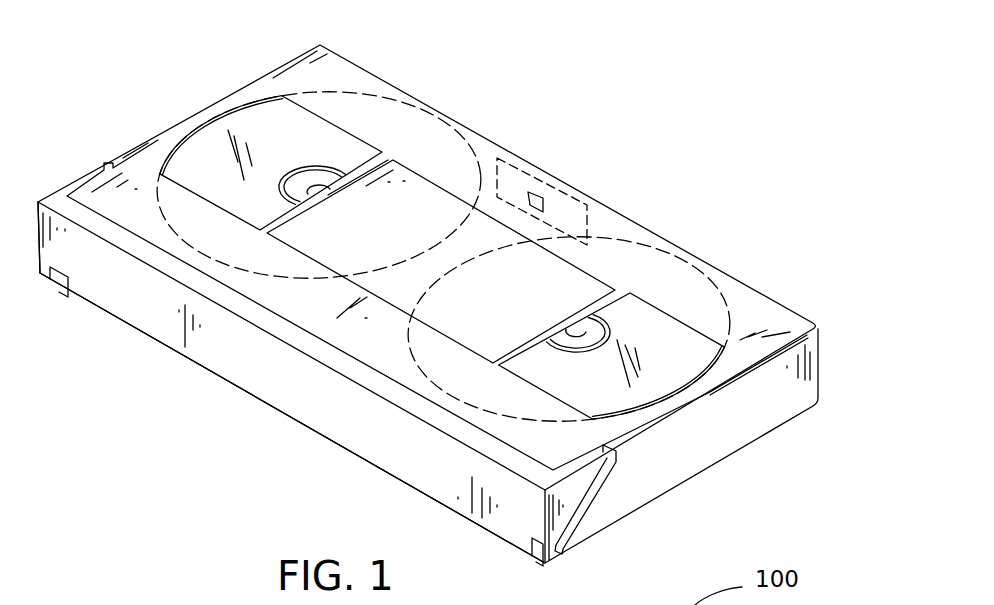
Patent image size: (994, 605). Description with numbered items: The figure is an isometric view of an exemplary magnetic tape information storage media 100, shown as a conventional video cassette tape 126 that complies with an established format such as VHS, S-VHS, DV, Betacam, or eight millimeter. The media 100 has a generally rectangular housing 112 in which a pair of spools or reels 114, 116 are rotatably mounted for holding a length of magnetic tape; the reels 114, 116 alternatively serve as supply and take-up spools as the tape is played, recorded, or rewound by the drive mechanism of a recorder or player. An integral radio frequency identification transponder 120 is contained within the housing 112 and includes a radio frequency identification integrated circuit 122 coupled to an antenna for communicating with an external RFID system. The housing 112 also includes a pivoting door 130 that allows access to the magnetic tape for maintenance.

The magnetic tape information storage media 100 is at (710, 140).
The housing 112 is at (773, 312).
The reel 114 is at (322, 173).
The reel 116 is at (593, 330).
The radio frequency identification (RFID) transponder 120 is at (508, 168).
The radio frequency identification integrated circuit (RFID IC) 122 is at (538, 197).
The video cassette tape 126 is at (263, 375).
The pivoting door 130 is at (133, 298).